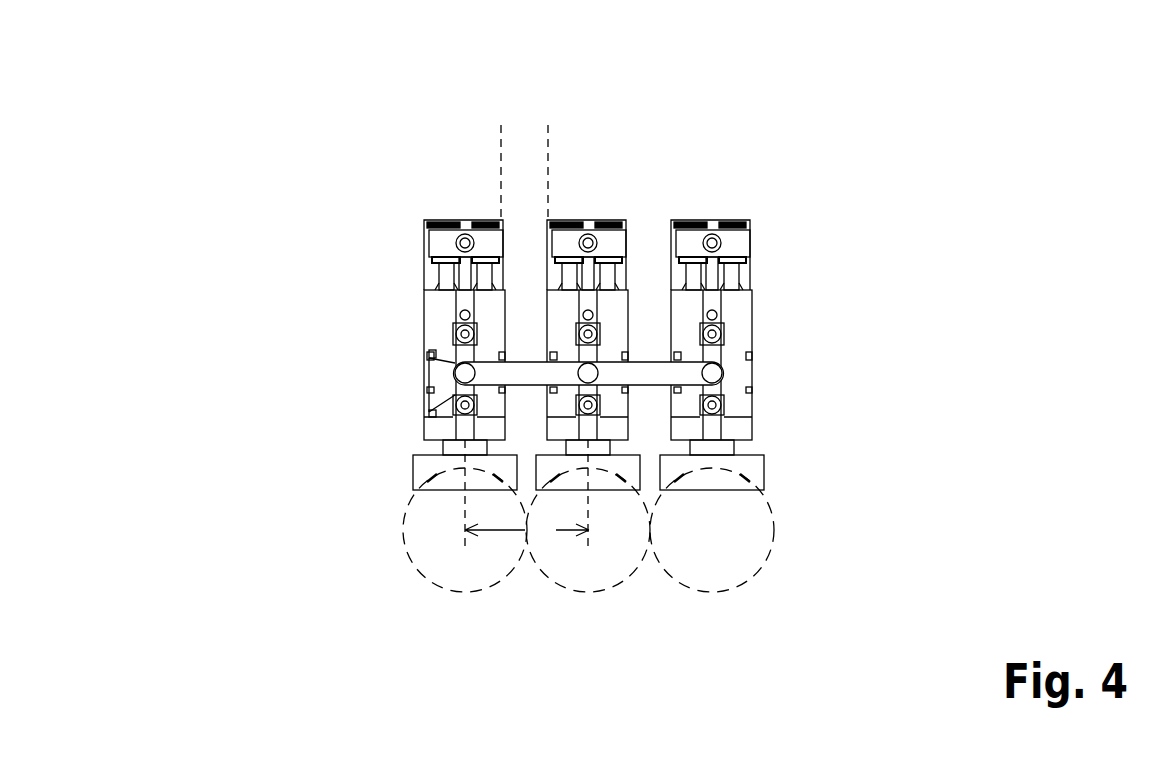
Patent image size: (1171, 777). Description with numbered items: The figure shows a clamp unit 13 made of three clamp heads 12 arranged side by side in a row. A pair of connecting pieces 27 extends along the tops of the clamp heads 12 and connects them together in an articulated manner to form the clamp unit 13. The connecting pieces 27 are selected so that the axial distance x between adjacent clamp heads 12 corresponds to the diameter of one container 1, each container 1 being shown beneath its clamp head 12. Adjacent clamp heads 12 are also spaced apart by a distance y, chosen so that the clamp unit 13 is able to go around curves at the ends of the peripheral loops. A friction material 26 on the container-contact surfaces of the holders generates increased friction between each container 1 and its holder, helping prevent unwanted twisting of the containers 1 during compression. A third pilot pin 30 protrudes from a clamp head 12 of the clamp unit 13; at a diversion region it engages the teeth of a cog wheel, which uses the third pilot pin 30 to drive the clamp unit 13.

The container 1 is at (428, 553).
The clamp head 12 is at (428, 327).
The clamp unit 13 is at (660, 154).
The friction material 26 is at (440, 472).
The connecting piece 27 is at (667, 370).
The third pilot pin 30 is at (462, 383).